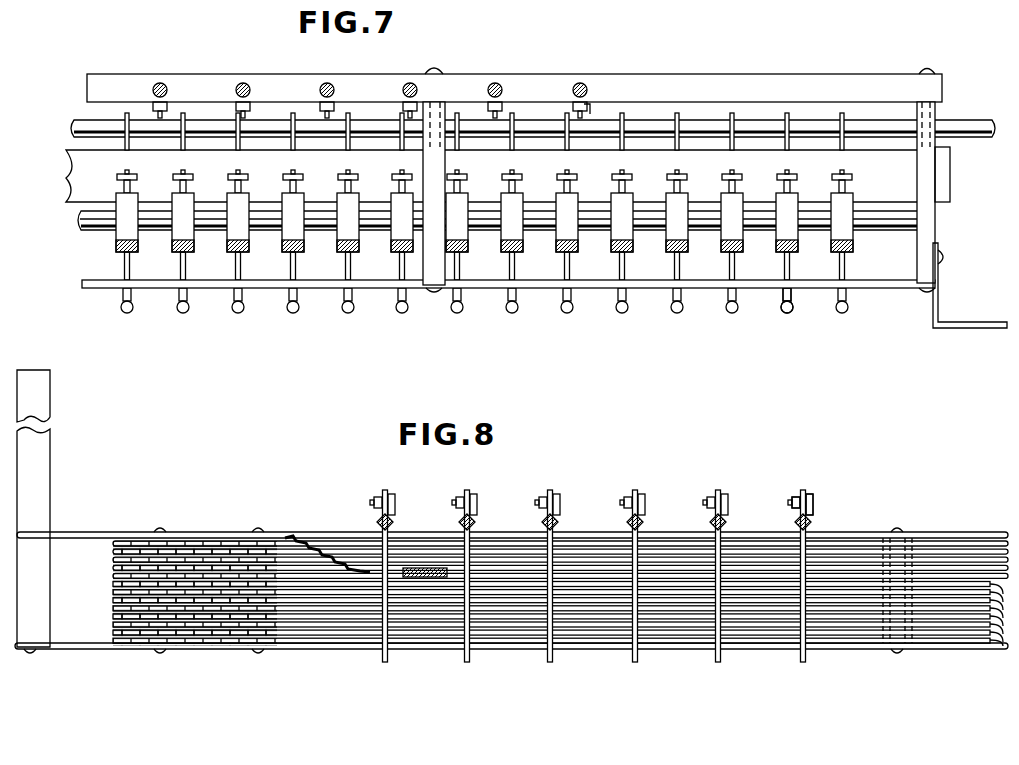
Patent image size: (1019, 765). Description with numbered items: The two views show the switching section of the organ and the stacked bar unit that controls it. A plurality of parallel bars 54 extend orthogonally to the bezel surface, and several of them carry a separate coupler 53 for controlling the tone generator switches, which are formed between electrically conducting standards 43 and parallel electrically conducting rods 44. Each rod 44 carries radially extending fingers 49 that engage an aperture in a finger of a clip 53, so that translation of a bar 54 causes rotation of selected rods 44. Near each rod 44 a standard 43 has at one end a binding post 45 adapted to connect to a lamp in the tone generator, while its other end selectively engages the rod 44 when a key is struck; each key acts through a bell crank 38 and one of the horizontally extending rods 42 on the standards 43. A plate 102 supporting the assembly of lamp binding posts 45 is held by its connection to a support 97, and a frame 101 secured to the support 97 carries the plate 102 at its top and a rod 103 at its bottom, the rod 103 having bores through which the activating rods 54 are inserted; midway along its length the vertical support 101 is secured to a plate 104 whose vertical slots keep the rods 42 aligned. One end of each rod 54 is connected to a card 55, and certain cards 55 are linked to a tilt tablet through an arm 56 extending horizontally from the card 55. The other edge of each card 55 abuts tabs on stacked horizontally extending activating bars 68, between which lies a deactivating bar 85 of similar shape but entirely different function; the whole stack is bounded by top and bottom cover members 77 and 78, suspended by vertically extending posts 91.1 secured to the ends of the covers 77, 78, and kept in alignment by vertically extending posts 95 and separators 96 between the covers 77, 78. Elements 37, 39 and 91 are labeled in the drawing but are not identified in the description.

In FIG. 7, the clamp jaw hatched pad 37 is at (856, 243).
In FIG. 7, the bell crank 38 is at (855, 200).
In FIG. 7, the clamp screw stem 39 is at (836, 184).
In FIG. 7, the horizontally extending rod 42 is at (853, 173).
In FIG. 7, the electrically conducting standard 43 is at (848, 126).
In FIG. 7, the electrically conducting rod 44 is at (985, 125).
In FIG. 7, the binding post 45 is at (787, 314).
In FIG. 7, the radially extending finger 49 is at (600, 112).
In FIG. 7, the coupler 53 is at (573, 106).
In FIG. 7, the parallel bar 54 is at (582, 86).
In FIG. 8, the parallel bar 54 is at (812, 514).
In FIG. 8, the card 55 is at (385, 662).
In FIG. 8, the arm 56 is at (798, 500).
In FIG. 8, the activating bar 68 is at (980, 562).
In FIG. 8, the top cover member 77 is at (73, 532).
In FIG. 8, the bottom cover member 78 is at (72, 650).
In FIG. 8, the deactivating bar 85 is at (985, 577).
In FIG. 8, the wire chain element 91 is at (415, 568).
In FIG. 8, the vertically extending post 91.1 is at (37, 470).
In FIG. 8, the vertically extending post 95 is at (162, 527).
In FIG. 8, the separator 96 is at (170, 540).
In FIG. 7, the support 97 is at (950, 325).
In FIG. 7, the frame 101 is at (925, 212).
In FIG. 7, the plate 102 is at (872, 289).
In FIG. 7, the rod 103 is at (838, 80).
In FIG. 7, the plate 104 is at (950, 176).